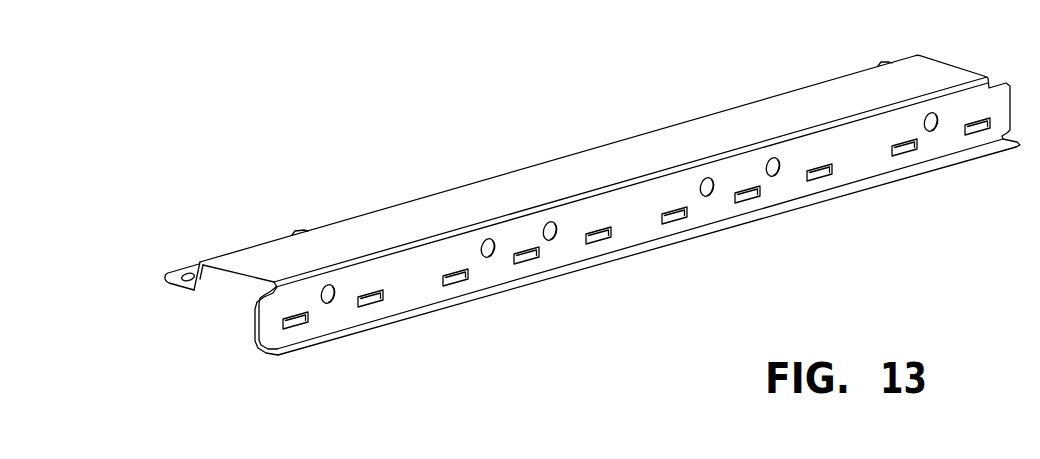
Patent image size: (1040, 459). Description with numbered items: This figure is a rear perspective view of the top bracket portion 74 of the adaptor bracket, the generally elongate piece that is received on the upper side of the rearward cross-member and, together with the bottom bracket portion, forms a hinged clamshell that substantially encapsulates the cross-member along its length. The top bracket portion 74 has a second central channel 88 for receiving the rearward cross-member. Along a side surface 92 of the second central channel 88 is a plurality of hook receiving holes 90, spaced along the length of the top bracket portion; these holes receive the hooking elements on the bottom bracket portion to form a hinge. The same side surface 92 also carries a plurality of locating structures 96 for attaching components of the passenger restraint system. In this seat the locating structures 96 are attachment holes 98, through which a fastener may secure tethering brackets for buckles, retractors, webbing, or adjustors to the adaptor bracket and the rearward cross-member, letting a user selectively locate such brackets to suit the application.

The top bracket portion 74 is at (590, 160).
The second central channel 88 is at (655, 143).
The hook receiving holes 90 is at (538, 258).
The side surface 92 is at (862, 150).
The locating structures 96 is at (790, 166).
The attachment holes 98 is at (710, 180).